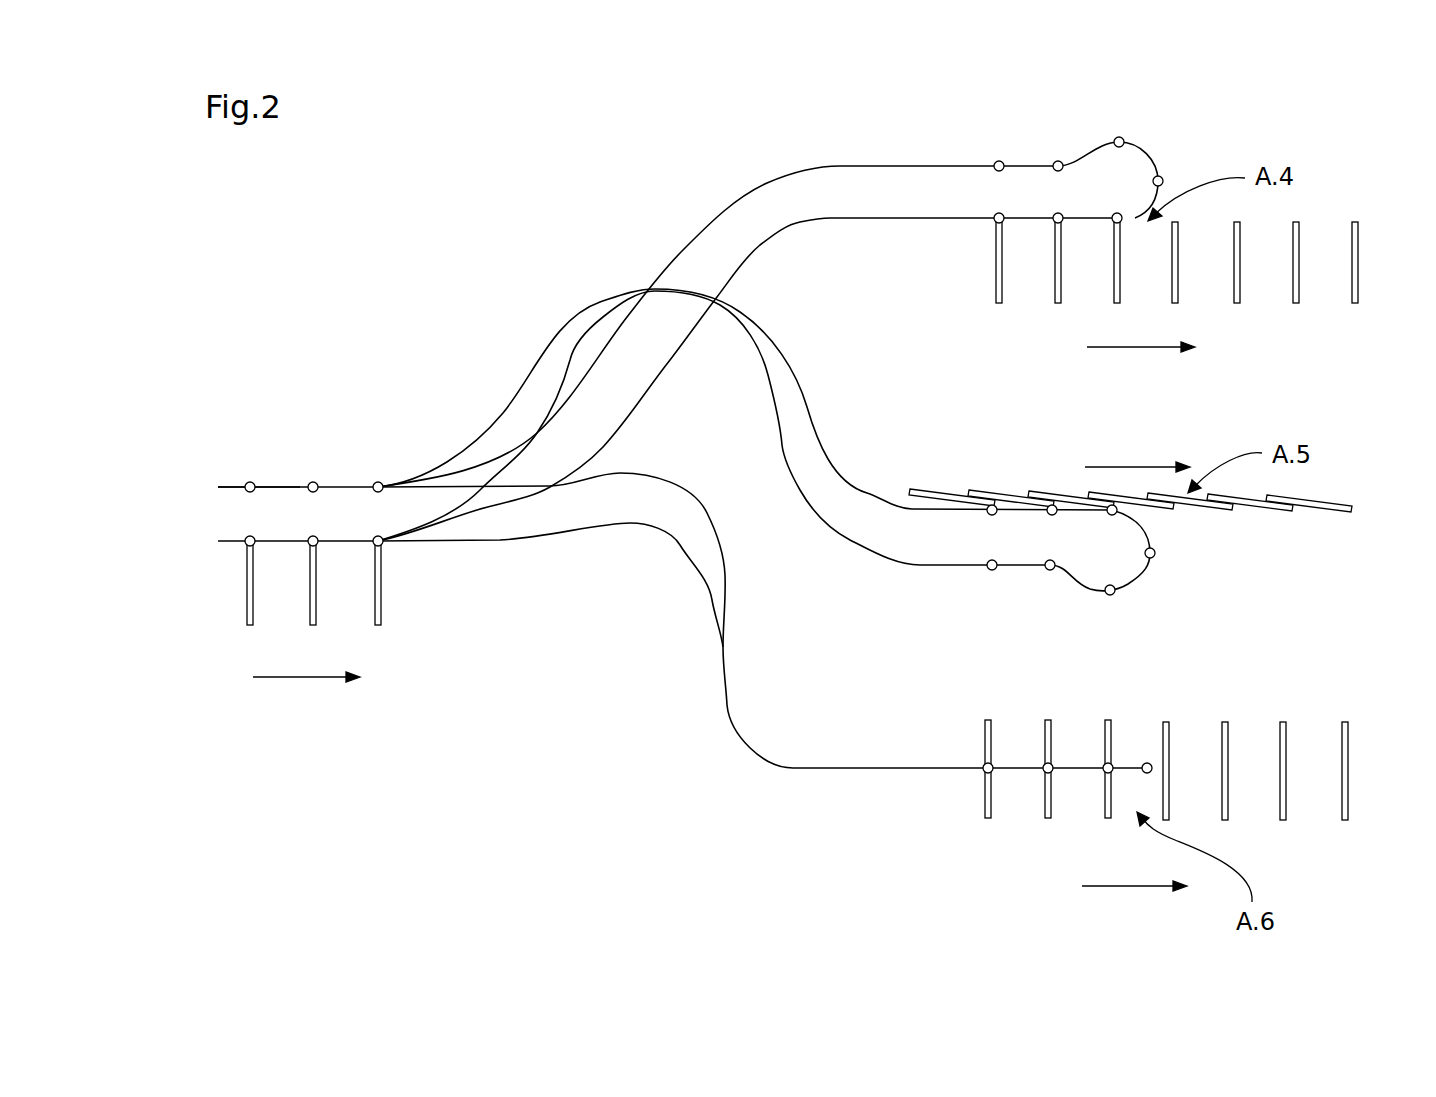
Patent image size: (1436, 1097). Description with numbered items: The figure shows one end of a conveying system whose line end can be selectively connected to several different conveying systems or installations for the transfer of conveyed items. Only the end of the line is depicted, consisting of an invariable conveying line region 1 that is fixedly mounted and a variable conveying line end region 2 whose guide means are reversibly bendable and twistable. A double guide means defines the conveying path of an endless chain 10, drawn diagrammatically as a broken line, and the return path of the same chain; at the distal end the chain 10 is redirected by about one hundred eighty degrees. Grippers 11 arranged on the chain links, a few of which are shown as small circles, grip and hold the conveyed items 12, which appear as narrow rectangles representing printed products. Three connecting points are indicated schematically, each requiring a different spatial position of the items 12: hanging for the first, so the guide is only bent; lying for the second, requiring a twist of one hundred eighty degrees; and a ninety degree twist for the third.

The invariable conveying line region 1 is at (313, 468).
The variable conveying line end region 2 is at (640, 273).
The endless chain 10 is at (350, 486).
The grippers 11 is at (247, 545).
The conveyed items 12 is at (380, 600).